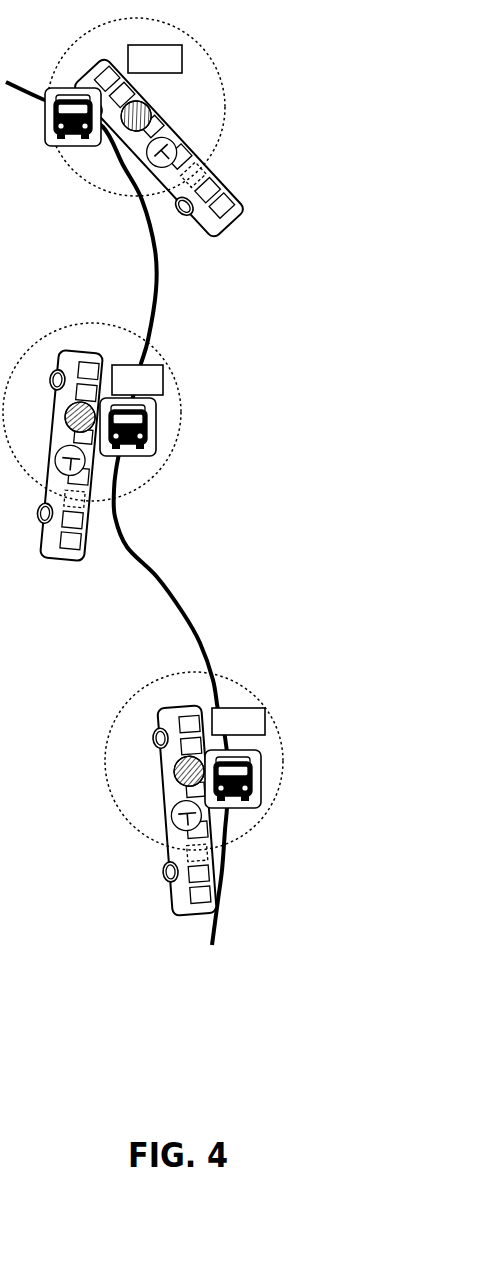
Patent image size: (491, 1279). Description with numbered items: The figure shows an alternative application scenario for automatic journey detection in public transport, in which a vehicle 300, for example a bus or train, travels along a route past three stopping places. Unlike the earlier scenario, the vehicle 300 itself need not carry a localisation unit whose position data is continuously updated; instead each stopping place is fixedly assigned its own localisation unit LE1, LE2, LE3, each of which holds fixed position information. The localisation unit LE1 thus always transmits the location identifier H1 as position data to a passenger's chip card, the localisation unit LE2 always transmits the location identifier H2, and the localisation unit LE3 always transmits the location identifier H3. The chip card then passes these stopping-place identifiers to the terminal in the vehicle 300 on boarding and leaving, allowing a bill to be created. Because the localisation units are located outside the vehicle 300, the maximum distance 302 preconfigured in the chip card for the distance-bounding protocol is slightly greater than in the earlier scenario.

The vehicle 300 is at (232, 182).
The maximum distance 302 is at (220, 80).
The location identifier H1 is at (76, 133).
The location identifier H2 is at (130, 445).
The location identifier H3 is at (233, 799).
The localisation unit LE1 is at (155, 59).
The localisation unit LE2 is at (137, 380).
The localisation unit LE3 is at (238, 721).